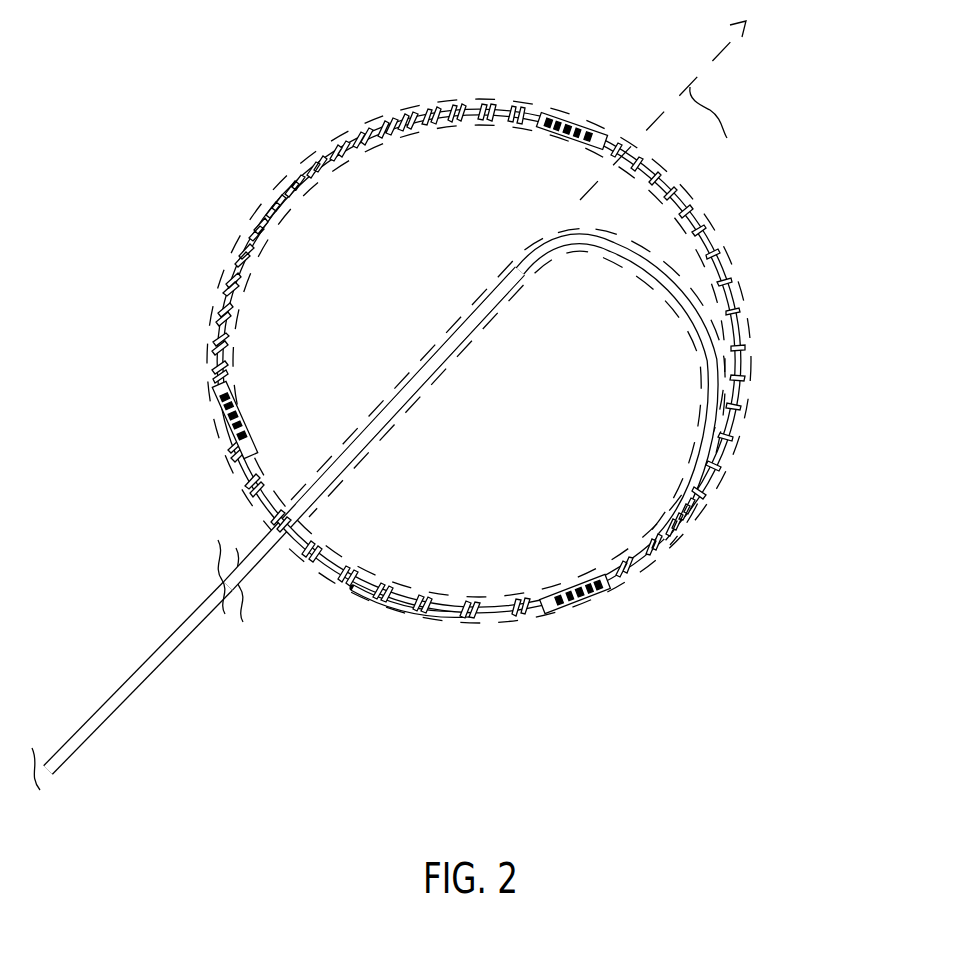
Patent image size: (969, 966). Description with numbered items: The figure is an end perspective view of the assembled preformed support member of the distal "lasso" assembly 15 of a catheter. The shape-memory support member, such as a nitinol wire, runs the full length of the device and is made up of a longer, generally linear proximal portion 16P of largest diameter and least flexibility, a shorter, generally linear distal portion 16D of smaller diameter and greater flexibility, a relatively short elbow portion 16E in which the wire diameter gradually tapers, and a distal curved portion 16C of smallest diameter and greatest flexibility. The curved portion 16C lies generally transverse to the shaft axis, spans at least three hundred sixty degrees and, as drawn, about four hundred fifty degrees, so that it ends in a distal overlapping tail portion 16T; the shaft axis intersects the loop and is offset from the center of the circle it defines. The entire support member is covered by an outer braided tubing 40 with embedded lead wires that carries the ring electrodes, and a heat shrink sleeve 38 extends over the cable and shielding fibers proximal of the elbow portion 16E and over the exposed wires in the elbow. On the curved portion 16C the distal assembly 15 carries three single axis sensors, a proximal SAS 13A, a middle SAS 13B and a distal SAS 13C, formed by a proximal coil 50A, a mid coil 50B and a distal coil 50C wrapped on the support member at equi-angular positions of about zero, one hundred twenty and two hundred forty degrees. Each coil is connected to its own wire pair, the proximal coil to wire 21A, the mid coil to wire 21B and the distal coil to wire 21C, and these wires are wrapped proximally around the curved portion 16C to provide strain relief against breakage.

The distal assembly 15 is at (864, 313).
The proximal portion of the support member 16P is at (120, 704).
The distal portion of the support member 16D is at (376, 432).
The elbow portion of the support member 16E is at (600, 250).
The curved portion of the support member 16C is at (355, 133).
The distal overlapping tail portion 16T is at (504, 624).
The heat shrink sleeve 38 is at (480, 321).
The outer braided tubing 40 is at (280, 187).
The proximal coil 50A is at (235, 415).
The mid coil 50B is at (572, 116).
The distal coil 50C is at (576, 587).
The proximal SAS 13A is at (235, 415).
The middle SAS 13B is at (593, 126).
The distal SAS 13C is at (593, 601).
The wire of the proximal coil wire pair 21A is at (410, 586).
The wire of the mid coil wire pair 21B is at (452, 118).
The wire of the distal coil wire pair 21C is at (468, 106).